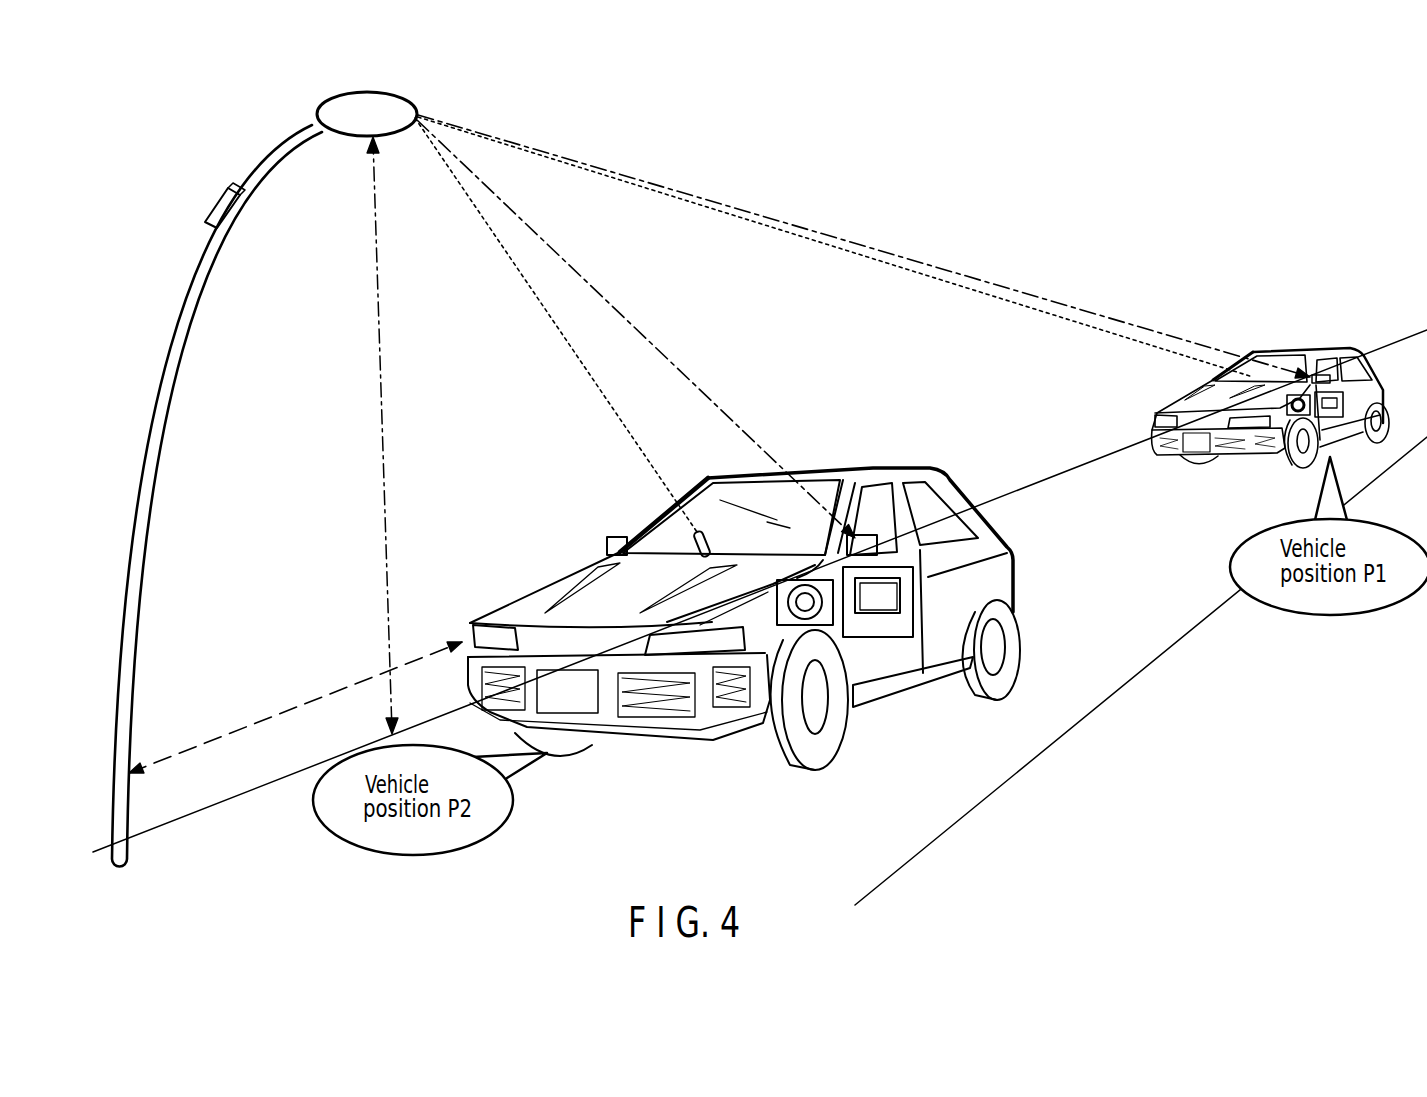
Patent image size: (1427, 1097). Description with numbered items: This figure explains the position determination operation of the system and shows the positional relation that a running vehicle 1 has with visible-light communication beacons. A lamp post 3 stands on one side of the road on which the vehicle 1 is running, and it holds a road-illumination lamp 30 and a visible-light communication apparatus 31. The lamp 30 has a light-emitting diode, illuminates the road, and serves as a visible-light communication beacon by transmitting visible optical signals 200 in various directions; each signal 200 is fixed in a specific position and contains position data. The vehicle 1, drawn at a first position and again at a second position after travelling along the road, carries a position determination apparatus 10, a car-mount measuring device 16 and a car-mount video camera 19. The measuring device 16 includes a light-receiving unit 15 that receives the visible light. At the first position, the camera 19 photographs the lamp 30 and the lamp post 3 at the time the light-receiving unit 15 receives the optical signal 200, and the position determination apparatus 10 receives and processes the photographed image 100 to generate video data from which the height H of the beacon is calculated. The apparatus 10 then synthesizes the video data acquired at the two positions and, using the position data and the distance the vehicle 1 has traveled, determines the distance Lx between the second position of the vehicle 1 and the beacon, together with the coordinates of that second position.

The vehicle 1 is at (845, 470).
The lamp post 3 is at (150, 420).
The position determination apparatus 10 is at (878, 595).
The light-receiving unit 15 is at (870, 533).
The car-mount measuring device 16 is at (810, 620).
The car-mount video camera 19 is at (685, 530).
The road-illumination lamp 30 is at (330, 97).
The visible-light communication apparatus 31 is at (213, 200).
The image 100 is at (536, 300).
The visible optical signals 200 is at (633, 329).
The height of the visible-light communication beacon H is at (375, 282).
The distance between the vehicle position and the beacon Lx is at (300, 704).